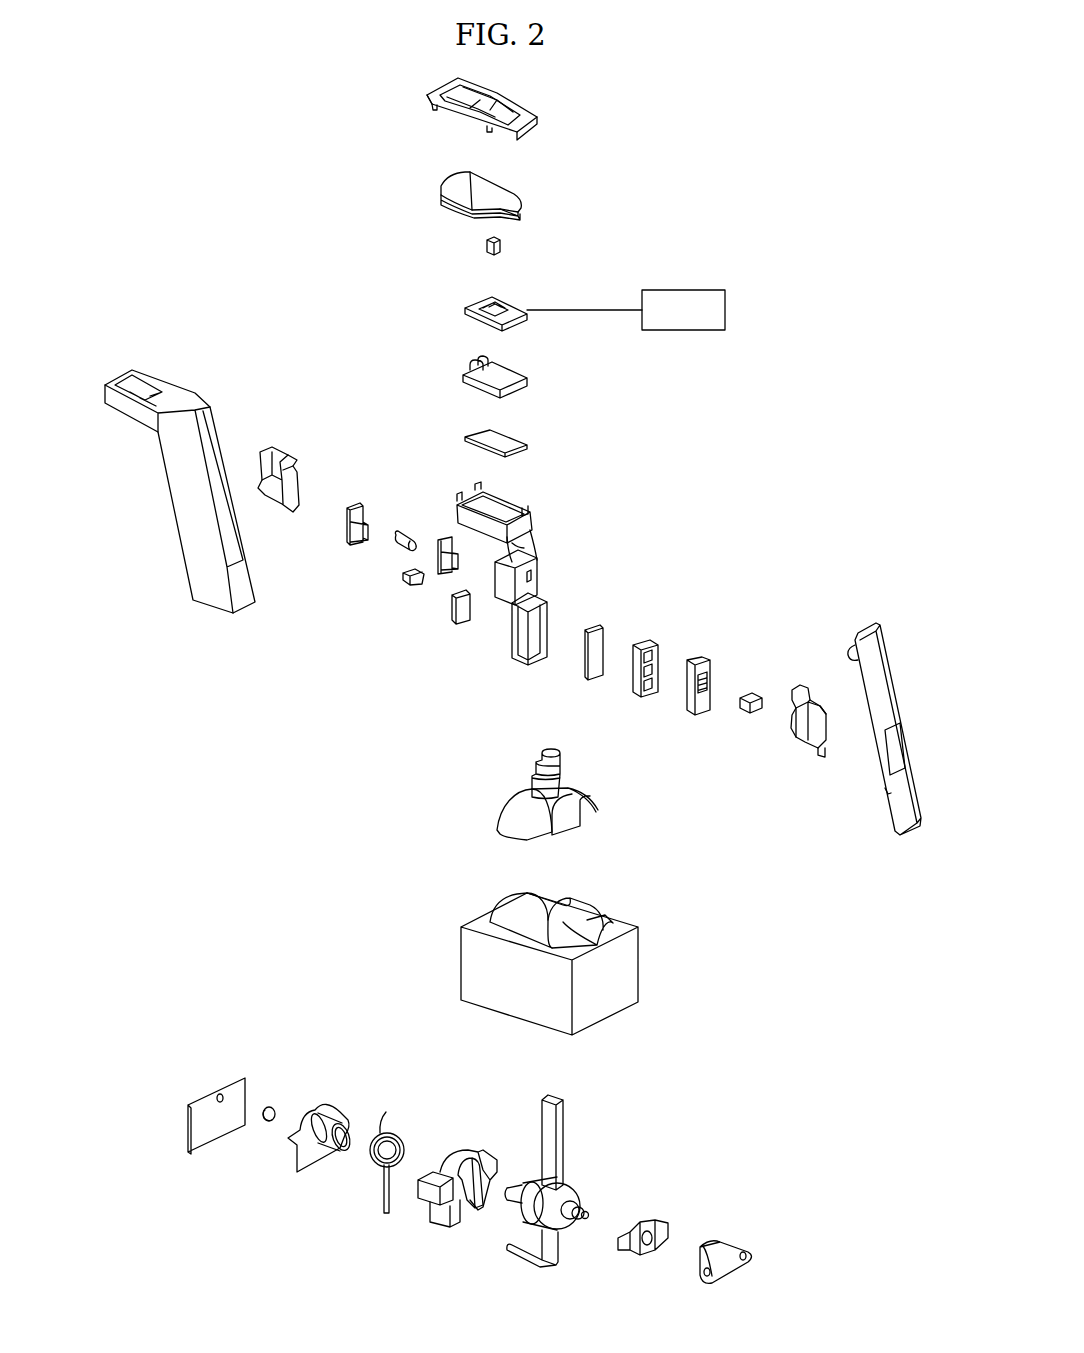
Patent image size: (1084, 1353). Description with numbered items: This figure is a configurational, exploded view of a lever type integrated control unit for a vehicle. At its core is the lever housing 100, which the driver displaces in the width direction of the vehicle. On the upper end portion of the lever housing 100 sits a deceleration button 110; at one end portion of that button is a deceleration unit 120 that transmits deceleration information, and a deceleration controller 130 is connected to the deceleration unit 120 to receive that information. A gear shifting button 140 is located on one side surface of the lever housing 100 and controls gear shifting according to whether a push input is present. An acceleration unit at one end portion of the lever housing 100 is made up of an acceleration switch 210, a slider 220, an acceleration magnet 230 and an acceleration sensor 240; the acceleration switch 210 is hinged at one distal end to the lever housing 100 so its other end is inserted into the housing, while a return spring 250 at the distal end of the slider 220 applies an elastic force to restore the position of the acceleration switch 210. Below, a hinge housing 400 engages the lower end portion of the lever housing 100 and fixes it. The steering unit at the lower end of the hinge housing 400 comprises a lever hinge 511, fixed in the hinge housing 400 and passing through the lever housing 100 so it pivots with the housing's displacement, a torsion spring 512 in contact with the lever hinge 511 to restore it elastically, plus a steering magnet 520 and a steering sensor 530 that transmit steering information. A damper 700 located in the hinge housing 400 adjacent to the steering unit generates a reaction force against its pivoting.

The lever housing 100 is at (188, 523).
The deceleration button 110 is at (498, 196).
The deceleration unit 120 is at (485, 245).
The deceleration controller 130 is at (702, 290).
The gear shifting button 140 is at (803, 688).
The acceleration switch 210 is at (270, 450).
The slider 220 is at (347, 530).
The acceleration magnet 230 is at (408, 579).
The acceleration sensor 240 is at (458, 610).
The return spring 250 is at (407, 532).
The hinge housing 400 is at (625, 975).
The lever hinge 511 is at (565, 1170).
The torsion spring 512 is at (383, 1125).
The steering magnet 520 is at (268, 1105).
The steering sensor 530 is at (212, 1100).
The damper 700 is at (718, 1245).